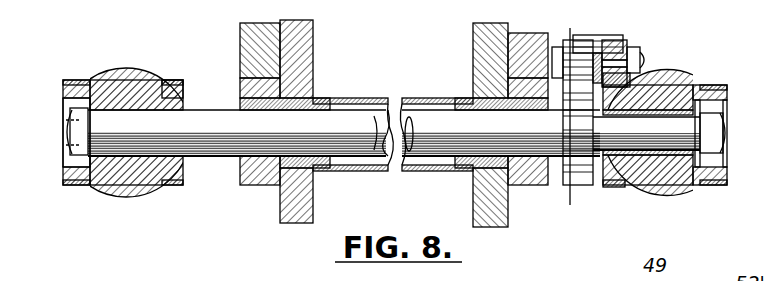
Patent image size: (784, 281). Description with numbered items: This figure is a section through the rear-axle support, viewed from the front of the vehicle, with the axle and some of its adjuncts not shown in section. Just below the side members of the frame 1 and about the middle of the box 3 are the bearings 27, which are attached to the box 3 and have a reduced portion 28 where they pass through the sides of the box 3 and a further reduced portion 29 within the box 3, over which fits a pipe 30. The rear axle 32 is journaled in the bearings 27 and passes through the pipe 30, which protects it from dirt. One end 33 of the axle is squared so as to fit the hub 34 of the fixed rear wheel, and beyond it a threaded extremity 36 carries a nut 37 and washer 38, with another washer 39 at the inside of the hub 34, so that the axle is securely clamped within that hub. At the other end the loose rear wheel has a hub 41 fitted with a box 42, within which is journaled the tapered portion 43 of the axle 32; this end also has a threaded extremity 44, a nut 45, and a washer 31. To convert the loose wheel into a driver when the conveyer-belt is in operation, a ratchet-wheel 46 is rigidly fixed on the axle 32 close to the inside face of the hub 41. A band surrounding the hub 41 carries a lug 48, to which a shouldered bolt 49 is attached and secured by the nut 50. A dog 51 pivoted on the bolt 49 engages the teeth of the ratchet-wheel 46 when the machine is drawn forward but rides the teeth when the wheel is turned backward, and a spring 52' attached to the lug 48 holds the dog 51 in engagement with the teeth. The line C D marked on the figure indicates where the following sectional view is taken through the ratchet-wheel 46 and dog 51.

The frame 1 is at (240, 48).
The box 3 is at (305, 48).
The bearings 27 is at (262, 182).
The reduced portion 28 is at (306, 176).
The further reduced portion 29 is at (322, 100).
The pipe 30 is at (396, 98).
The washer 31 is at (703, 108).
The rear axle 32 is at (344, 133).
The squared end 33 is at (120, 140).
The hub 34 is at (118, 188).
The threaded extremity 36 is at (68, 136).
The nut 37 is at (75, 118).
The washer 38 is at (85, 104).
The washer 39 is at (185, 100).
The hub 41 is at (688, 195).
The box 42 is at (665, 160).
The tapered portion 43 is at (646, 133).
The threaded extremity 44 is at (722, 132).
The nut 45 is at (715, 150).
The ratchet-wheel 46 is at (588, 186).
The lug 48 is at (620, 42).
The shouldered bolt 49 is at (648, 62).
The nut 50 is at (646, 58).
The dog 51 is at (564, 42).
The spring 52' is at (600, 30).
The section line C D C is at (571, 102).
The section line C D is at (566, 127).